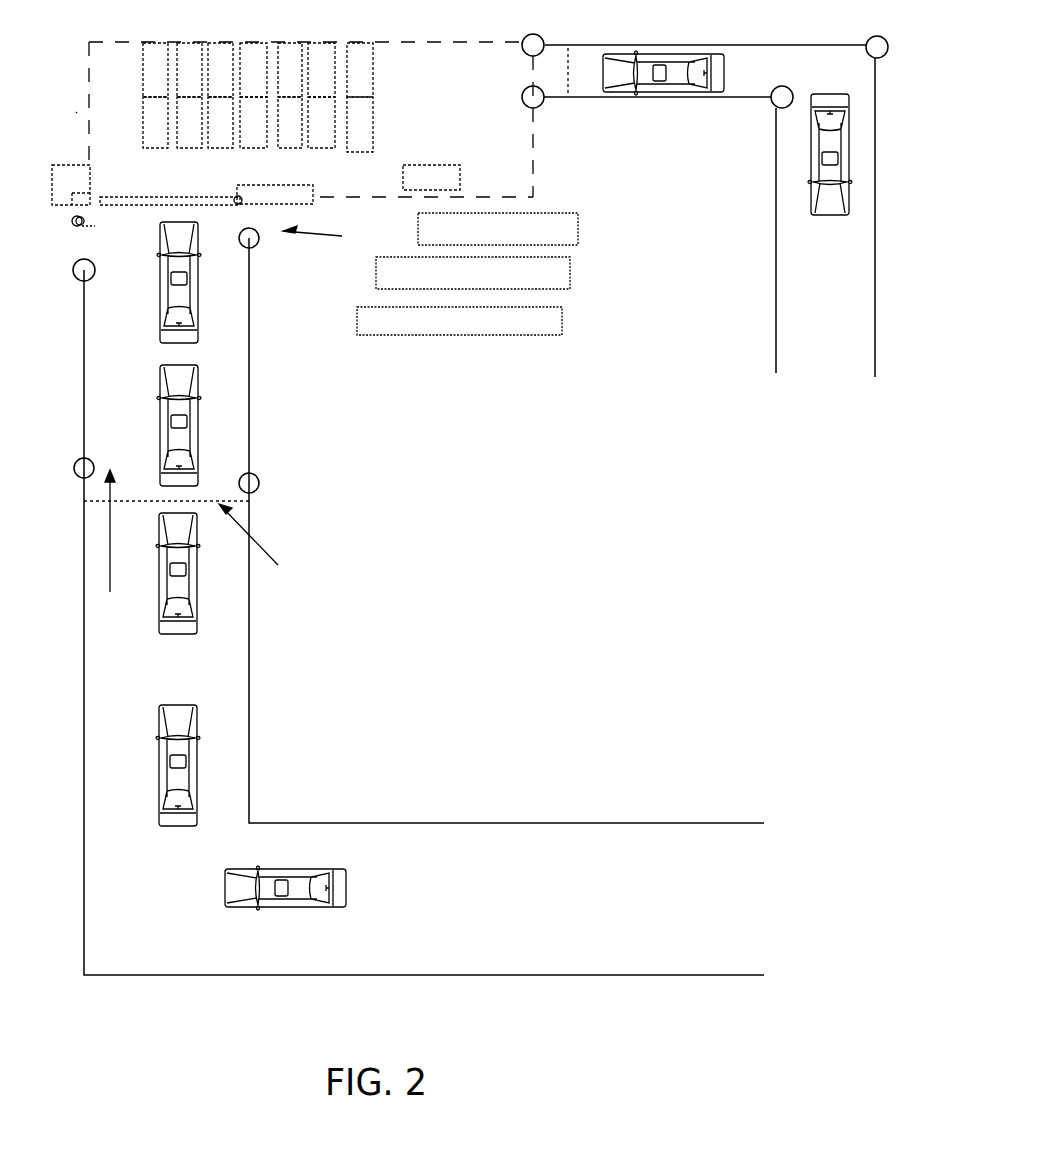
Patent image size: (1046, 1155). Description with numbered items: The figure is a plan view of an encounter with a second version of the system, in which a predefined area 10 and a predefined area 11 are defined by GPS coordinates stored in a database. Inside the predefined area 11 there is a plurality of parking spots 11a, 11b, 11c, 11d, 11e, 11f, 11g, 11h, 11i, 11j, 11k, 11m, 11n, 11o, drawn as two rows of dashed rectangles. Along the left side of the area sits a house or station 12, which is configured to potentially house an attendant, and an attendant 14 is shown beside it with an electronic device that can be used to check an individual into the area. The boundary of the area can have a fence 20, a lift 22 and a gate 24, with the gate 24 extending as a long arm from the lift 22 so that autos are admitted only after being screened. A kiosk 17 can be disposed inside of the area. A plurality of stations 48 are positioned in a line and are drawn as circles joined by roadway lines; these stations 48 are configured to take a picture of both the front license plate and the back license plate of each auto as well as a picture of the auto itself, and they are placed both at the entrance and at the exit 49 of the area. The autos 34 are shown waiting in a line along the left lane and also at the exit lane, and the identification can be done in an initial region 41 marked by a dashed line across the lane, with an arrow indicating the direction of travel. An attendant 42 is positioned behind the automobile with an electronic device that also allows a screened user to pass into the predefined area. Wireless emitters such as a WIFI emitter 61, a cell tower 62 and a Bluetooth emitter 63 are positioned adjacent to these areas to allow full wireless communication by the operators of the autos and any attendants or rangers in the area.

The predefined area 10 is at (77, 113).
The predefined area 11 is at (107, 69).
The parking spot 11a is at (152, 51).
The parking spot 11b is at (191, 52).
The parking spot 11c is at (224, 52).
The parking spot 11d is at (255, 50).
The parking spot 11e is at (302, 47).
The parking spot 11f is at (148, 134).
The parking spot 11g is at (190, 143).
The parking spot 11h is at (216, 148).
The parking spot 11i is at (258, 150).
The parking spot 11j is at (288, 150).
The parking spot 11k is at (328, 50).
The parking spot 11m is at (318, 150).
The parking spot 11n is at (364, 50).
The parking spot 11o is at (365, 117).
The station 12 is at (68, 174).
The attendant 14 is at (72, 218).
The kiosk 17 is at (460, 165).
The fence 20 is at (268, 200).
The lift 22 is at (236, 204).
The gate 24 is at (182, 202).
The autos 34 is at (168, 247).
The region 41 is at (189, 531).
The attendant 42 is at (323, 236).
The stations 48 is at (546, 44).
The exit 49 is at (568, 88).
The WIFI emitter 61 is at (498, 229).
The cell tower 62 is at (473, 273).
The Bluetooth emitter 63 is at (459, 321).